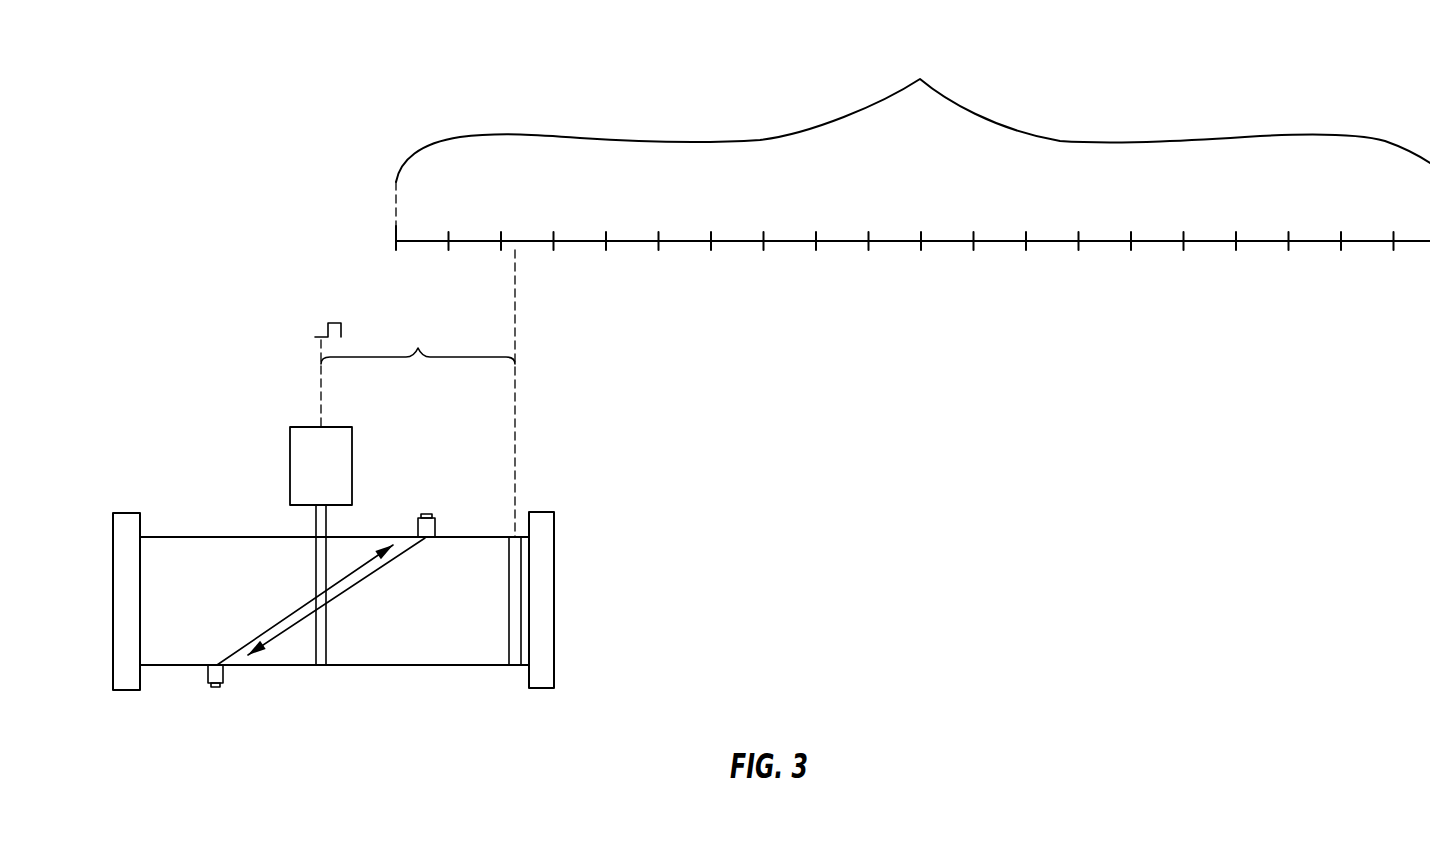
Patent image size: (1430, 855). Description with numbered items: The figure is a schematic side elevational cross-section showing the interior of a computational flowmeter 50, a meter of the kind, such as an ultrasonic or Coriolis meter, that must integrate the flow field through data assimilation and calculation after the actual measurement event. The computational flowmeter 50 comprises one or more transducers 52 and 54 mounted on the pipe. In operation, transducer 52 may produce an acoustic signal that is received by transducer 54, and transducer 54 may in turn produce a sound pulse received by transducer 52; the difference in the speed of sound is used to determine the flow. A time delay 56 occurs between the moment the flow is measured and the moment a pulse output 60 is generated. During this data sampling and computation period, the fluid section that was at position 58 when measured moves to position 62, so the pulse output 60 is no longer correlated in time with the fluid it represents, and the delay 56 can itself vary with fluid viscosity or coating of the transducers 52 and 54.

The computational flowmeter 50 is at (164, 475).
The transducer 52 is at (203, 676).
The transducer 54 is at (437, 530).
The time delay 56 is at (418, 337).
The position 58 is at (322, 647).
The pulse output 60 is at (340, 322).
The position 62 is at (513, 657).